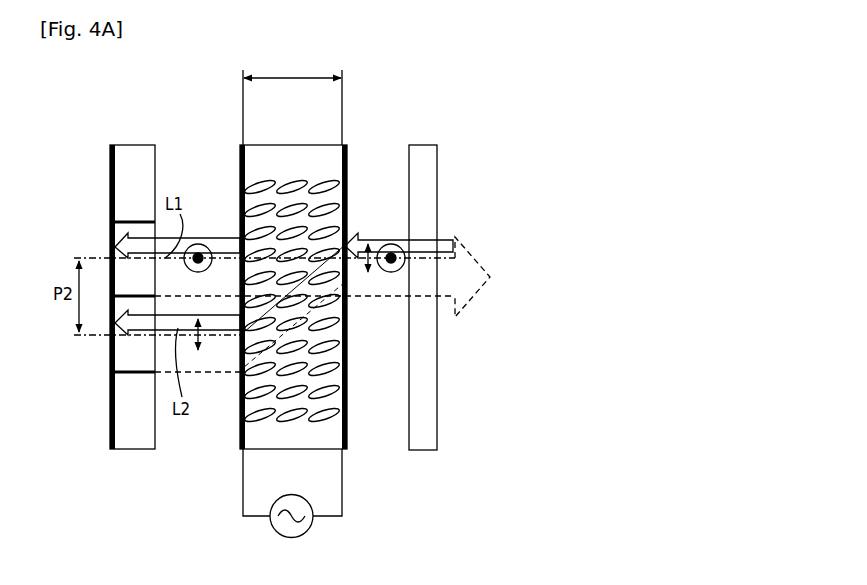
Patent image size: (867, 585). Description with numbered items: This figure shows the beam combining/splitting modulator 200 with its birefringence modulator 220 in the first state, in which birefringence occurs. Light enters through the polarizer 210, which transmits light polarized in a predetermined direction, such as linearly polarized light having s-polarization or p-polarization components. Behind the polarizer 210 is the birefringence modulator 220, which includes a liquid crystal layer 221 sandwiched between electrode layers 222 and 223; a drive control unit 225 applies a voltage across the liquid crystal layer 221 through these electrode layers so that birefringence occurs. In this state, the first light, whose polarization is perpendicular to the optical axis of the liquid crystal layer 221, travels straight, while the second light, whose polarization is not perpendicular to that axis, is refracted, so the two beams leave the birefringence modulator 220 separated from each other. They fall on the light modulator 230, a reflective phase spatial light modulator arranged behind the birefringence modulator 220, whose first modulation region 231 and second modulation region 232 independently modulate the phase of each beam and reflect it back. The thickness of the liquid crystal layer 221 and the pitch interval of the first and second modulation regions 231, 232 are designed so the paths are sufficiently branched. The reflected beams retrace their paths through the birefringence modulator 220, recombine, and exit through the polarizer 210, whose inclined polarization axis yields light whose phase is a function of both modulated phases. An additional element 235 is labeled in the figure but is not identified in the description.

The display device 200 is at (472, 123).
The first polarizing plate 210 is at (424, 144).
The liquid crystal panel 220 is at (295, 142).
The liquid crystal layer 221 is at (311, 442).
The first substrate electrode 222 is at (241, 451).
The second substrate electrode 223 is at (344, 451).
The AC voltage source 225 is at (271, 533).
The second polarizing plate 230 is at (136, 141).
The first pattern region 231 is at (117, 228).
The second pattern region 232 is at (117, 372).
The reflective layer 235 is at (110, 450).